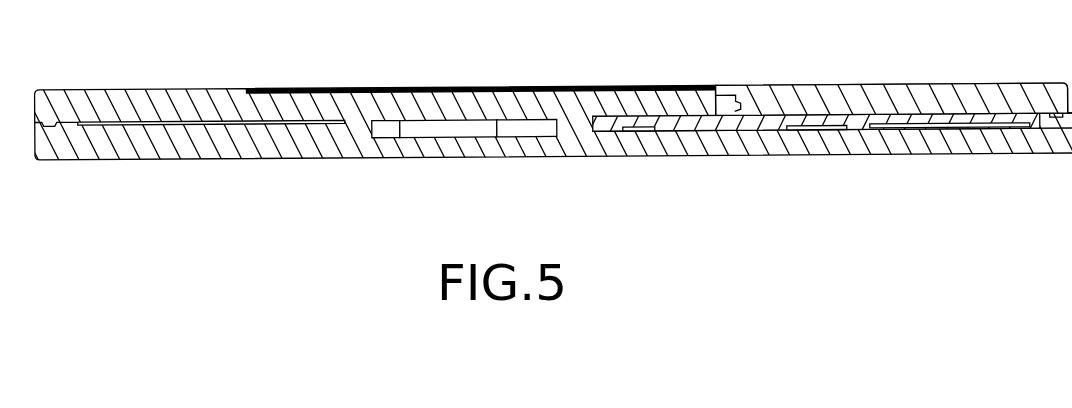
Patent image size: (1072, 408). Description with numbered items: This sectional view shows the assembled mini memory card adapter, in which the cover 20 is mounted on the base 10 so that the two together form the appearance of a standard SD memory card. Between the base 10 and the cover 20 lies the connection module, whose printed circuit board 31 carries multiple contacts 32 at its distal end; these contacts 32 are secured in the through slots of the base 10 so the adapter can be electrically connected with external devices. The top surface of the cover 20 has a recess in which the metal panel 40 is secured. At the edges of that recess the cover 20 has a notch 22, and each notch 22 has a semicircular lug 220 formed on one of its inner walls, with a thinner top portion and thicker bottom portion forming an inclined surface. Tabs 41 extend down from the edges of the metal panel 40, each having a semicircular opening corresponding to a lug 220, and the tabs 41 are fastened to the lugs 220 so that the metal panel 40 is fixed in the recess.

The base 10 is at (900, 157).
The cover 20 is at (806, 96).
The lug 220 is at (728, 94).
The notch 22 is at (727, 122).
The printed circuit board 31 is at (857, 128).
The contacts 32 is at (947, 142).
The metal panel 40 is at (578, 92).
The tabs 41 is at (740, 118).